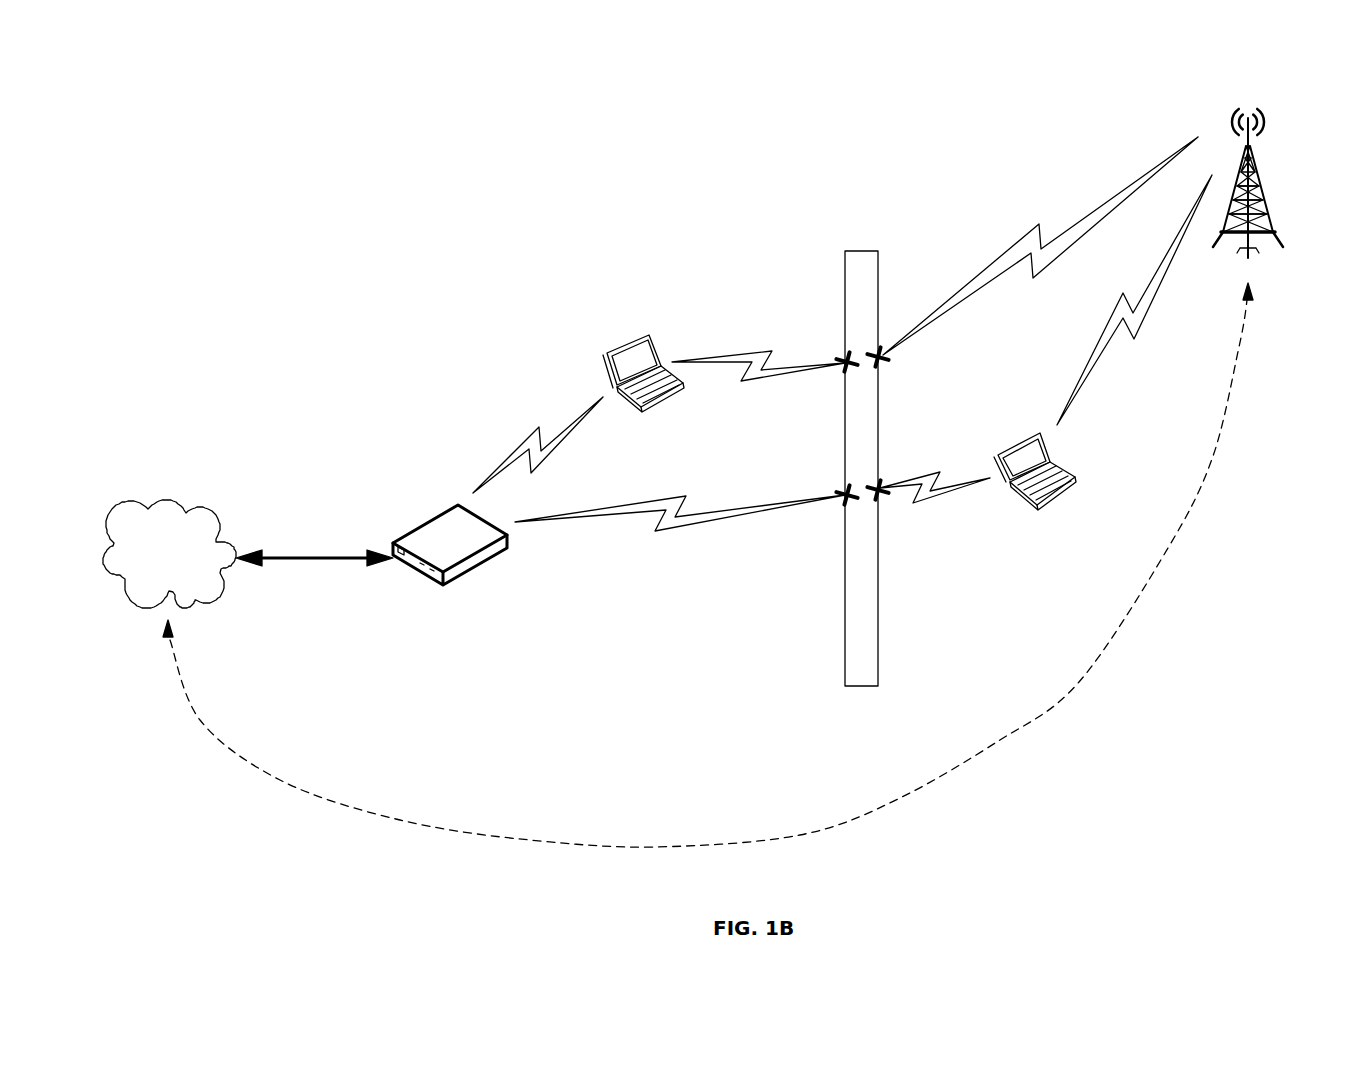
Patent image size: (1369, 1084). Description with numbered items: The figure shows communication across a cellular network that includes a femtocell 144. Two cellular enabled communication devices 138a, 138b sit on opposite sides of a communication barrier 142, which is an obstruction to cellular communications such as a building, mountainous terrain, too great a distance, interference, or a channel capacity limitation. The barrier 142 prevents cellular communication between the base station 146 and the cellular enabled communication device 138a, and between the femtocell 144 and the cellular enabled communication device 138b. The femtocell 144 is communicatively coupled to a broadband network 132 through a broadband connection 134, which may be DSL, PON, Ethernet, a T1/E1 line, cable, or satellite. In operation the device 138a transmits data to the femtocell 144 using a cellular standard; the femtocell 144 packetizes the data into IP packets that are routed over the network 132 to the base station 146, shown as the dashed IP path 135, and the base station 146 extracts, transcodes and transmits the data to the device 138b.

The broadband network 132 is at (156, 506).
The broadband connection 134 is at (333, 558).
The IP connection 135 is at (652, 848).
The cellular enabled communication device 138a is at (647, 409).
The cellular enabled communication device 138b is at (1053, 497).
The communication barrier 142 is at (845, 251).
The femtocell 144 is at (431, 522).
The base station 146 is at (1258, 171).